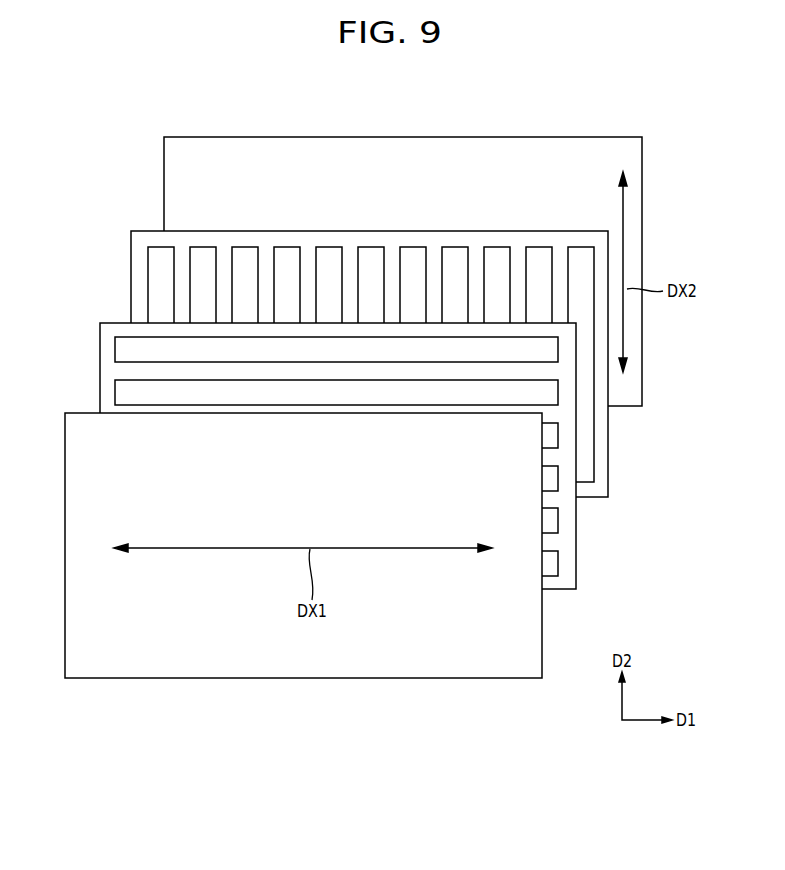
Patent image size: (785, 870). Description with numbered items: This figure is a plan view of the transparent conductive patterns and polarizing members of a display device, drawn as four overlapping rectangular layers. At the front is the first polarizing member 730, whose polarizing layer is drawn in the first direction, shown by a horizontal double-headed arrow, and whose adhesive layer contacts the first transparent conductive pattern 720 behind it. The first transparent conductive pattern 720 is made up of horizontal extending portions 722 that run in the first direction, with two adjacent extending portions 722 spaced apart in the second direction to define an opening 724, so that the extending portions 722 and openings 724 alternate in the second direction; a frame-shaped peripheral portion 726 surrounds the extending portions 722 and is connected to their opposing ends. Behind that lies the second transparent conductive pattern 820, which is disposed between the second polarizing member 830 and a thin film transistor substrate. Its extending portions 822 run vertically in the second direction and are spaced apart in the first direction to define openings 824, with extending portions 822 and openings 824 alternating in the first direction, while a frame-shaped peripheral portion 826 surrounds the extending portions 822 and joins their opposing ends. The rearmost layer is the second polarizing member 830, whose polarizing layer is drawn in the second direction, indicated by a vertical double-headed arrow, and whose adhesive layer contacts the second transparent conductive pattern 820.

The first transparent conductive pattern 720 is at (292, 456).
The extending portion 722 is at (122, 371).
The opening 724 is at (118, 350).
The peripheral portion 726 is at (105, 391).
The first polarizing member 730 is at (542, 623).
The second transparent conductive pattern 820 is at (324, 364).
The extending portion 822 is at (178, 280).
The opening 824 is at (157, 259).
The peripheral portion 826 is at (138, 299).
The second polarizing member 830 is at (628, 388).